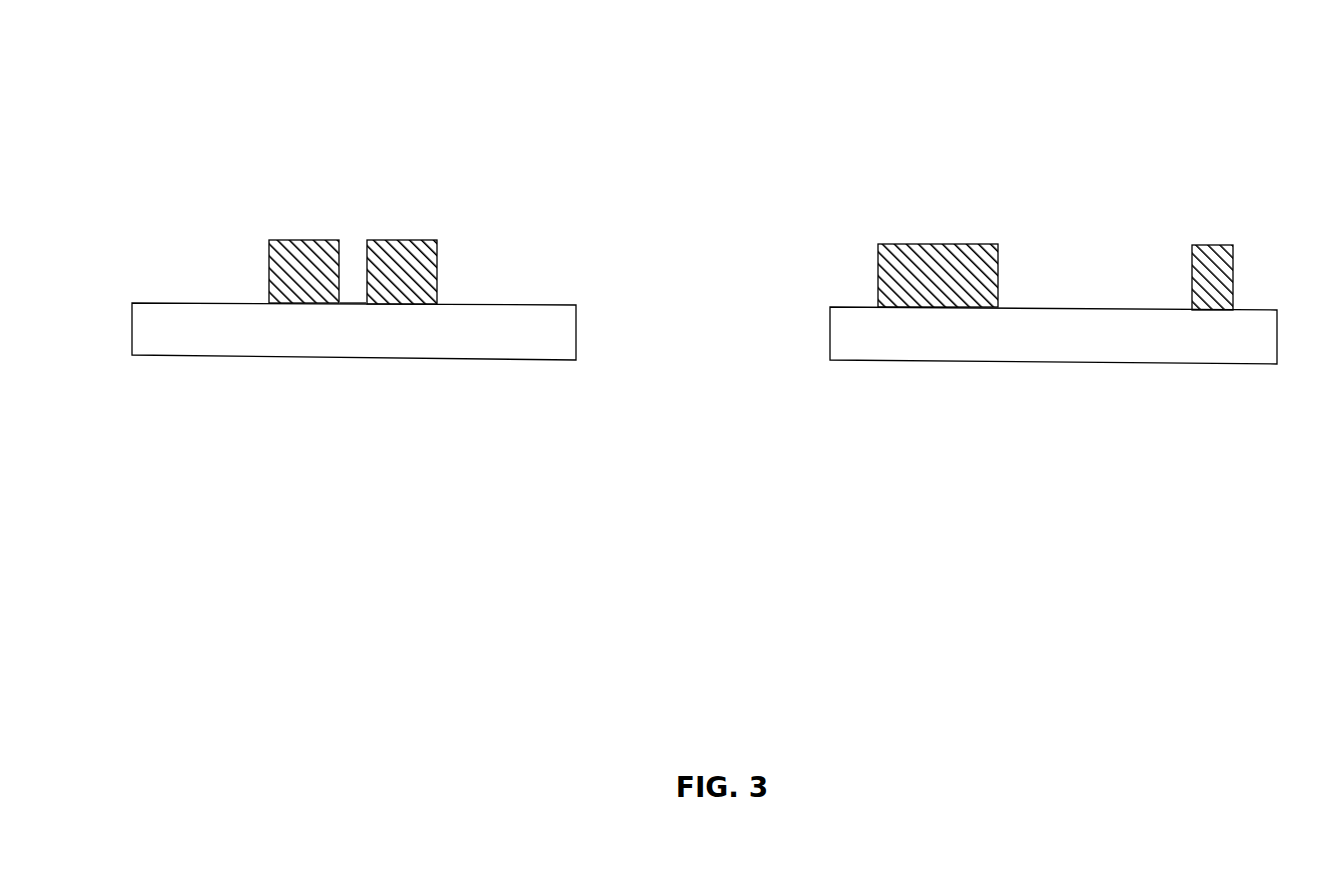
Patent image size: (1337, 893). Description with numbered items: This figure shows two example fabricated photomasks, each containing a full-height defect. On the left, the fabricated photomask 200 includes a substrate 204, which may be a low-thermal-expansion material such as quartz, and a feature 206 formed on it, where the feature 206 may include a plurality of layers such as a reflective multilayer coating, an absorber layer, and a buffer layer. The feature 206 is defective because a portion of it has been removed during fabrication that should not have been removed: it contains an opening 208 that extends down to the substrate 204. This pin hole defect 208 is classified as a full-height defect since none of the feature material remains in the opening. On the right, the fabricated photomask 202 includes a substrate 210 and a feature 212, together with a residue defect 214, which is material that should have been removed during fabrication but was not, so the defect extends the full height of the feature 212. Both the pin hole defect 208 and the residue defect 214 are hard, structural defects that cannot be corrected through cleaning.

The fabricated photomask 200 is at (226, 106).
The fabricated photomask 202 is at (904, 128).
The substrate 204 is at (468, 356).
The feature 206 is at (268, 268).
The opening 208 is at (352, 228).
The substrate 210 is at (888, 362).
The feature 212 is at (877, 277).
The residue defect 214 is at (1233, 270).